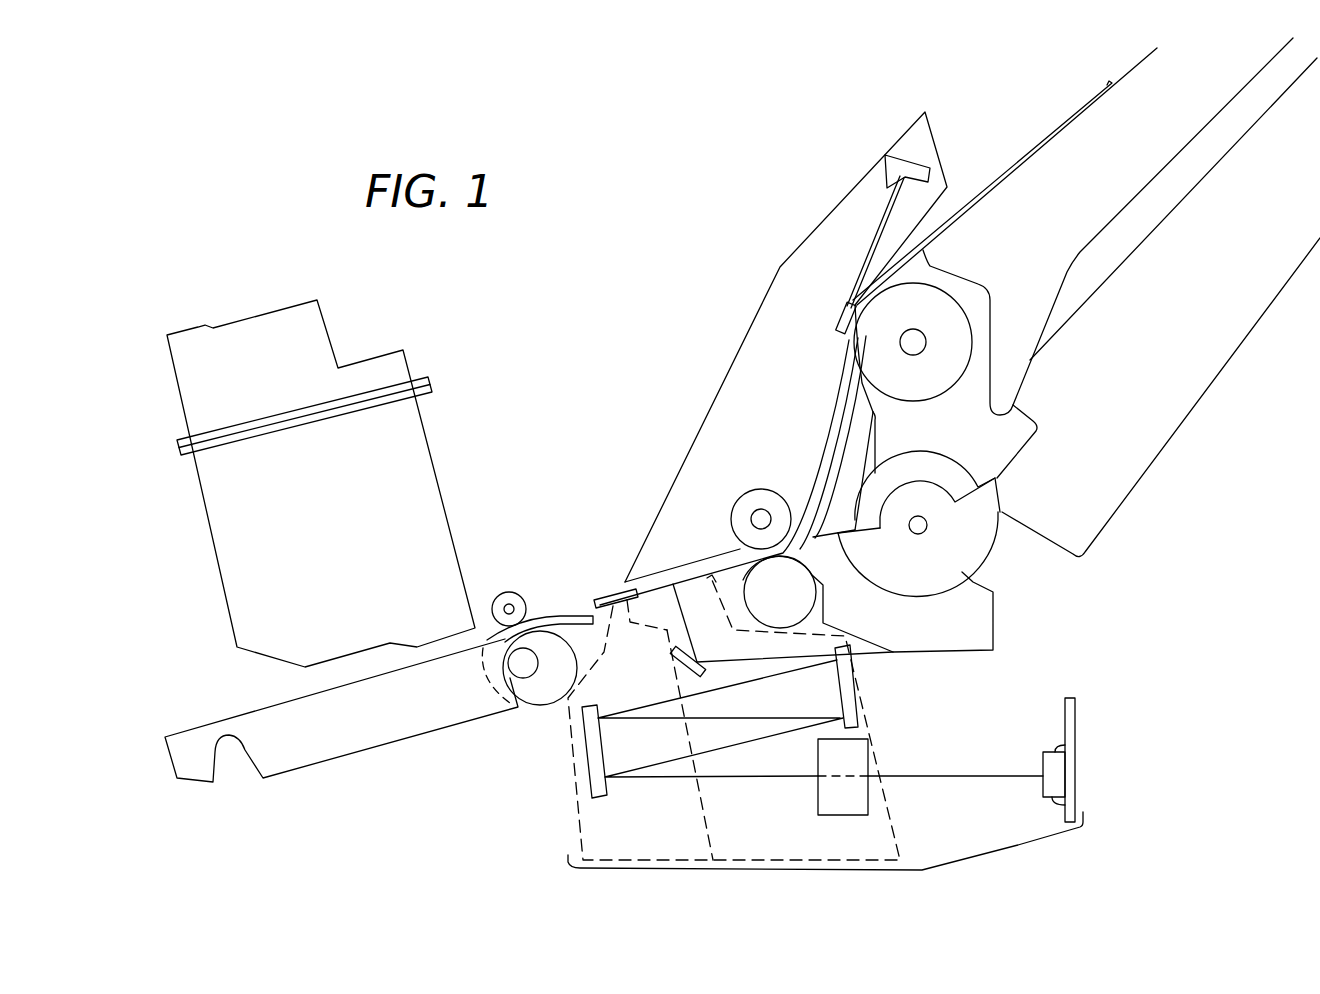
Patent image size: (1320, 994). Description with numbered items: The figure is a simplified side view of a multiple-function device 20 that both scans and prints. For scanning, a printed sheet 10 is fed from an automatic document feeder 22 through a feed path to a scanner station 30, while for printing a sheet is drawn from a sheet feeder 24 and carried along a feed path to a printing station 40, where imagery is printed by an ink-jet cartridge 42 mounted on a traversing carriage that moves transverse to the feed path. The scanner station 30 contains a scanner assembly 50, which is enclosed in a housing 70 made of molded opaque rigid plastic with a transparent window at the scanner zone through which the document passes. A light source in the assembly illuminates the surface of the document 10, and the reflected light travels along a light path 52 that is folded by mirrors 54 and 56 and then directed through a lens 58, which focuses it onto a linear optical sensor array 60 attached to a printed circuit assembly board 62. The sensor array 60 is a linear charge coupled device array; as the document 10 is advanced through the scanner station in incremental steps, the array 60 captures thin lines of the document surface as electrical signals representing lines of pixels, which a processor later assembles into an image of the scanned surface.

The printed sheet 10 is at (997, 182).
The multiple-function device 20 is at (552, 380).
The automatic document feeder 22 is at (1127, 75).
The sheet feeder 24 is at (1112, 510).
The scanner station 30 is at (554, 733).
The printing station 40 is at (388, 764).
The ink-jet cartridge 42 is at (202, 540).
The scanner assembly 50 is at (1013, 847).
The light path 52 is at (673, 656).
The mirror 54 is at (853, 690).
The mirror 56 is at (593, 797).
The lens 58 is at (860, 750).
The linear optical sensor array 60 is at (1048, 752).
The printed circuit assembly board 62 is at (1072, 698).
The housing 70 is at (903, 848).